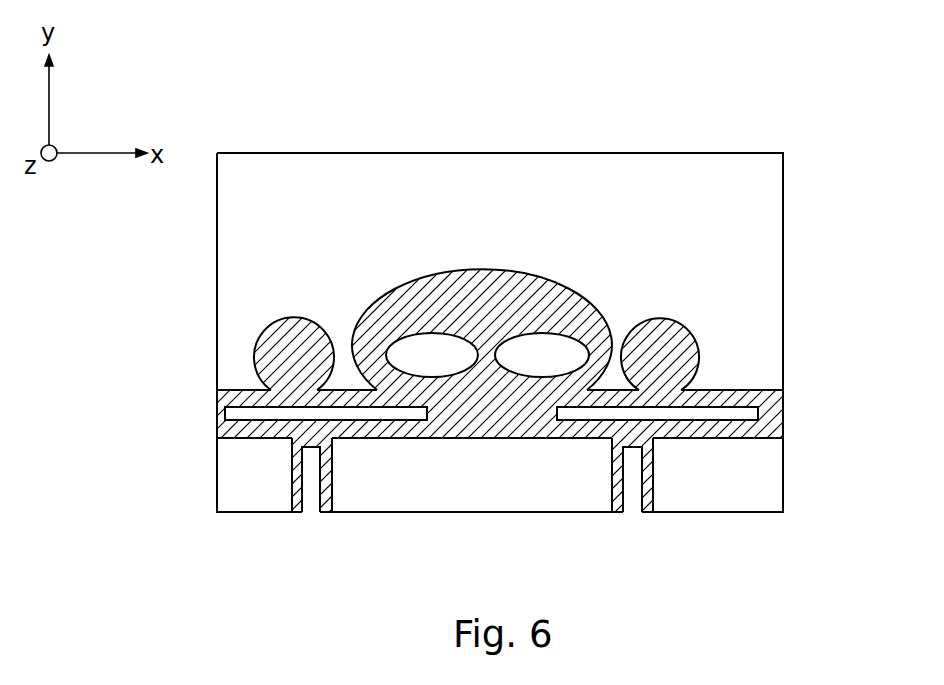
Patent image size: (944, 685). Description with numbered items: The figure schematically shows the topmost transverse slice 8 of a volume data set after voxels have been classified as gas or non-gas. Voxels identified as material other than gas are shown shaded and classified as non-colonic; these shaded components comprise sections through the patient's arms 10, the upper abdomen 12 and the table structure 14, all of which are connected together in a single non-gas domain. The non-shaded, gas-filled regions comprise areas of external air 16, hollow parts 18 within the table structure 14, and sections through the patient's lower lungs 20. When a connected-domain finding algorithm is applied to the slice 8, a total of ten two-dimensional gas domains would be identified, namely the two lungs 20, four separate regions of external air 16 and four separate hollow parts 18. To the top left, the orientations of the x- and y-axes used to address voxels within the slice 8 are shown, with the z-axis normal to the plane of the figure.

The topmost transverse slice 8 is at (783, 180).
The patient's arms 10 is at (295, 358).
The upper abdomen 12 is at (522, 295).
The table structure 14 is at (350, 430).
The external air 16 is at (272, 203).
The hollow parts 18 is at (237, 412).
The lower lungs 20 is at (540, 353).